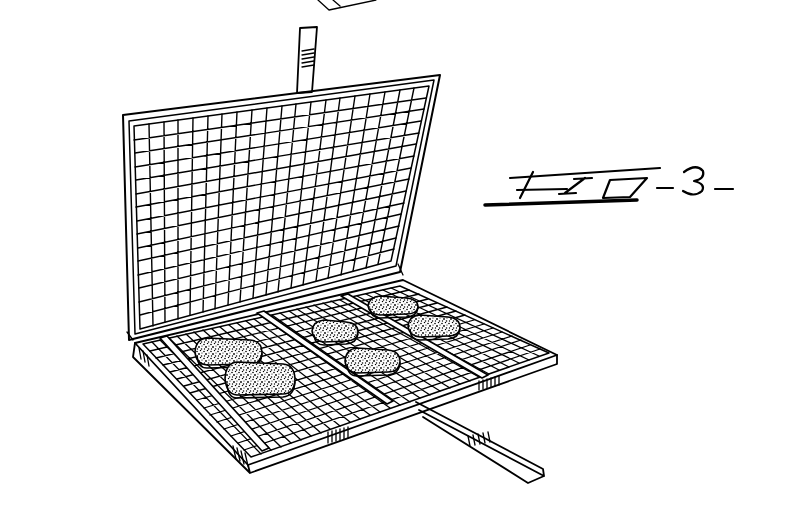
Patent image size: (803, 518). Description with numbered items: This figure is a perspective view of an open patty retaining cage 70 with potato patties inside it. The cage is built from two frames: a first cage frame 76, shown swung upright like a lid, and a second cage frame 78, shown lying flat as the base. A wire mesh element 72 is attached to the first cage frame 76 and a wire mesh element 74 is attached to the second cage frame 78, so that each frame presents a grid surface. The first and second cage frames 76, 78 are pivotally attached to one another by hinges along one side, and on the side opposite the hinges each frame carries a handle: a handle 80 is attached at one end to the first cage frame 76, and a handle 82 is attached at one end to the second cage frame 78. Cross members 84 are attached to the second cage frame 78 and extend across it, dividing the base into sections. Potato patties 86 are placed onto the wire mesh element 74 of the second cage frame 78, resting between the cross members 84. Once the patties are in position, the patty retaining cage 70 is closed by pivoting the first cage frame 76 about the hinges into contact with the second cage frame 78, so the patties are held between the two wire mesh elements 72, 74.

The patty retaining cage 70 is at (100, 349).
The wire mesh element 72 is at (382, 144).
The wire mesh element 74 is at (488, 349).
The first cage frame 76 is at (123, 178).
The second cage frame 78 is at (172, 402).
The handle 80 is at (313, 51).
The handle 82 is at (514, 460).
The cross members 84 is at (227, 425).
The potato patties 86 is at (418, 297).